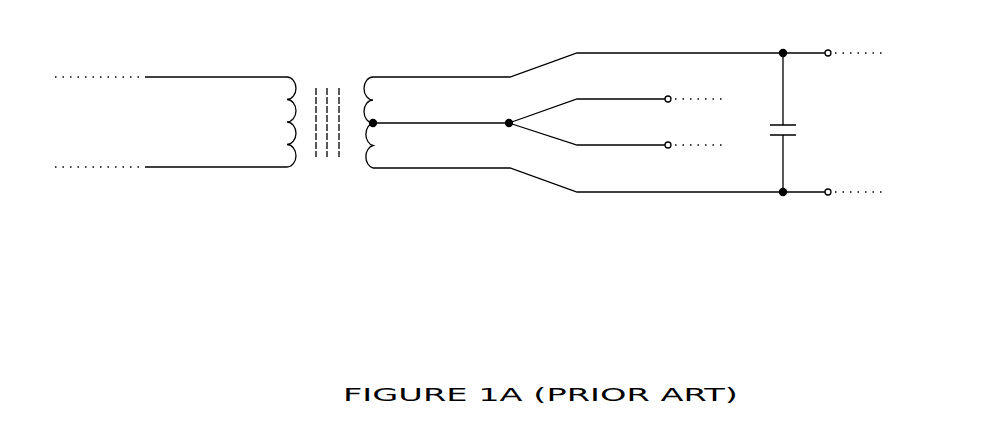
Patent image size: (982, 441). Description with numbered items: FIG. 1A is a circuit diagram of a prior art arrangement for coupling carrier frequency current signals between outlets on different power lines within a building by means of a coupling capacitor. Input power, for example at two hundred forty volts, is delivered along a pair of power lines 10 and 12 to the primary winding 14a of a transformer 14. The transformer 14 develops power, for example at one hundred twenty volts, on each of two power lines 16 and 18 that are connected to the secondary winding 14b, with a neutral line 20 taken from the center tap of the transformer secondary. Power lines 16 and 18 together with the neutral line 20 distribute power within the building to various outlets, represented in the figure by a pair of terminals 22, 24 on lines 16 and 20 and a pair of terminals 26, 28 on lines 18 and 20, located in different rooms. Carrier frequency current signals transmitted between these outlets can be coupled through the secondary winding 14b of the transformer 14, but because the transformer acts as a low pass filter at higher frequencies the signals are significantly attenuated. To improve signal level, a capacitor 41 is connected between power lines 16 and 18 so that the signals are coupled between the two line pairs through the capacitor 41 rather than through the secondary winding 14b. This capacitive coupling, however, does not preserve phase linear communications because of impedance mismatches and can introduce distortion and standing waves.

The power line 10 is at (236, 76).
The power line 12 is at (238, 175).
The transformer 14 is at (329, 74).
The primary winding 14a is at (284, 123).
The secondary winding 14b is at (375, 100).
The power line 16 is at (443, 75).
The power line 18 is at (396, 171).
The neutral line 20 is at (398, 126).
The terminal 22 is at (834, 47).
The terminal 24 is at (670, 93).
The terminal 26 is at (826, 200).
The terminal 28 is at (671, 150).
The capacitor 41 is at (788, 121).